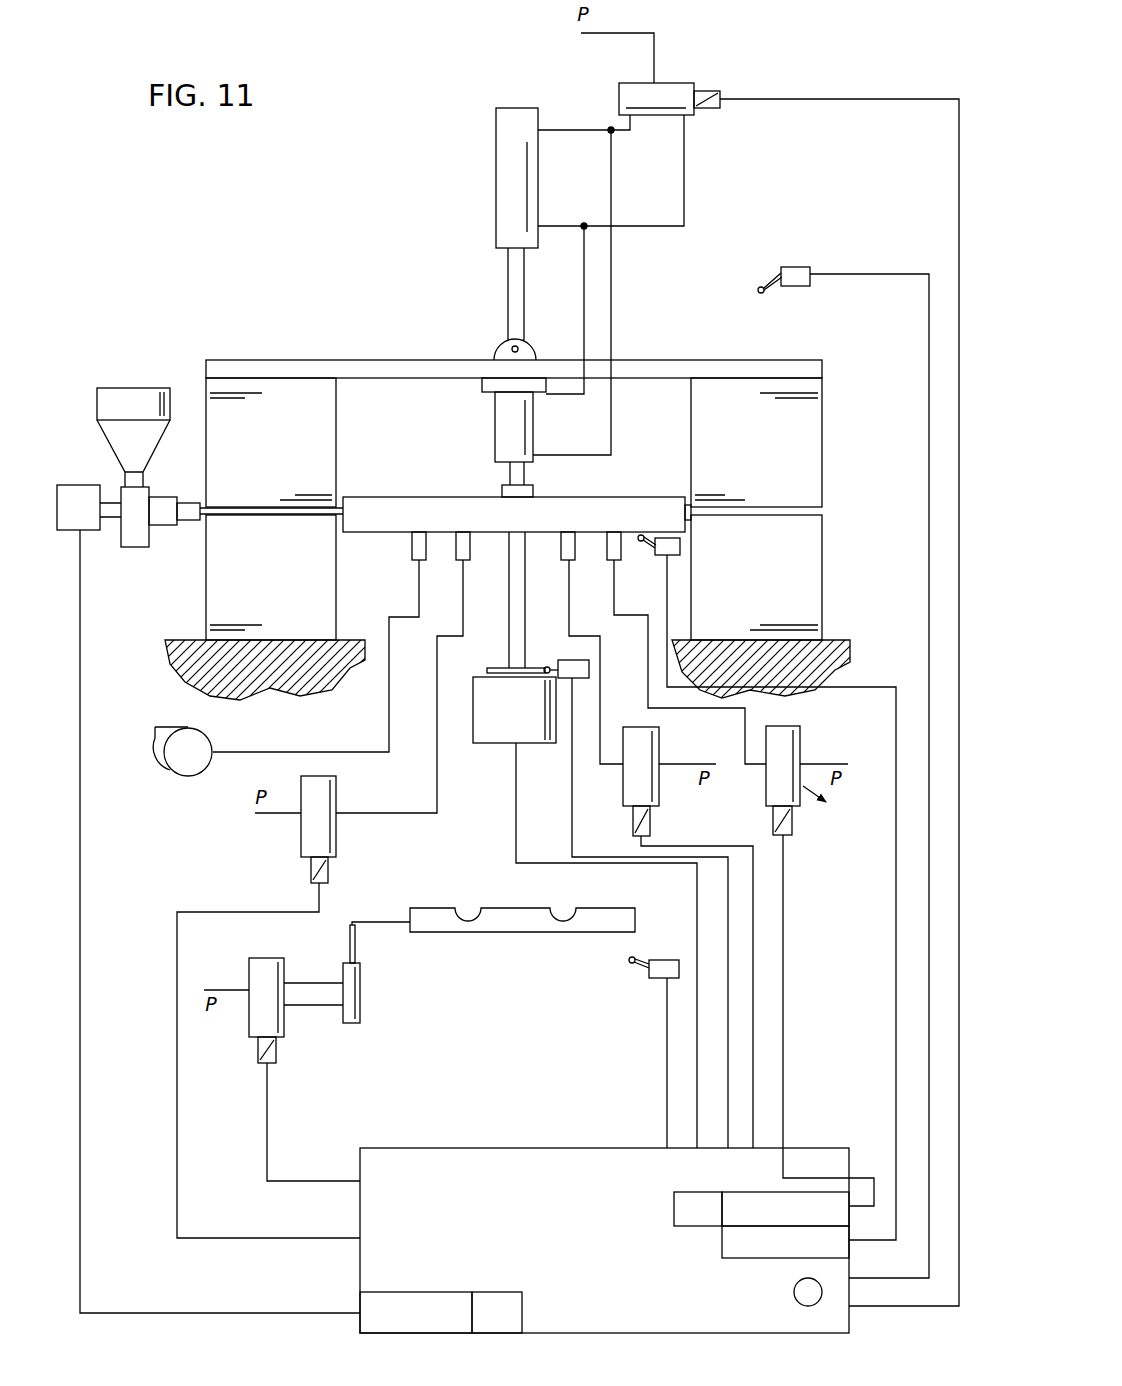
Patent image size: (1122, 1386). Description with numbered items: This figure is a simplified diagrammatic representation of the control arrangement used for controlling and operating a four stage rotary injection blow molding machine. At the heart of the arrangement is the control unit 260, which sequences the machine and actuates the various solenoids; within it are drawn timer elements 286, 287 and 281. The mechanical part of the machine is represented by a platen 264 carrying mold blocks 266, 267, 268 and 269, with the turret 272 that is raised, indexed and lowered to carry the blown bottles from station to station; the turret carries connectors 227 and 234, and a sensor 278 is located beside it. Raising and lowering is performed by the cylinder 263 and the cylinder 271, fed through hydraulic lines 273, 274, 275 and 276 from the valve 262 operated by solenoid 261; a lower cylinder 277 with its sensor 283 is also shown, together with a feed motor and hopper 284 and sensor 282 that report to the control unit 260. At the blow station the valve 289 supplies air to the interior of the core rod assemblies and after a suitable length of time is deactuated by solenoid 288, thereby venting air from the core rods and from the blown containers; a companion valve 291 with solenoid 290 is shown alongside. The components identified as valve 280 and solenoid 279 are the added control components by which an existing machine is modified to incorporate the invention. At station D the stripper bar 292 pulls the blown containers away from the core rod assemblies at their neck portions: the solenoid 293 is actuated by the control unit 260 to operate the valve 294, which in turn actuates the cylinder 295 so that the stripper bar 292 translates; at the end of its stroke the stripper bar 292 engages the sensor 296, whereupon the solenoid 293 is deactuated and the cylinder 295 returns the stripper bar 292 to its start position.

The heating element connector 227 is at (418, 545).
The thermocouple connector 234 is at (464, 545).
The control unit 260 is at (604, 1205).
The solenoid of valve 261 is at (701, 103).
The valve 262 is at (670, 83).
The hydraulic cylinder 263 is at (505, 143).
The upper platen 264 is at (703, 360).
The upper left mold block 266 is at (252, 458).
The upper right mold block 267 is at (739, 458).
The lower left mold block 268 is at (252, 585).
The lower right mold block 269 is at (739, 585).
The injection cylinder 271 is at (498, 422).
The turret 272 is at (613, 498).
The hydraulic line 273 is at (583, 323).
The hydraulic line 274 is at (613, 276).
The hydraulic line 275 is at (553, 223).
The hydraulic line 276 is at (585, 126).
The lower cylinder 277 is at (500, 731).
The limit switch 278 is at (683, 543).
The control component 279 is at (325, 879).
The control component 280 is at (332, 843).
The timer 281 is at (742, 1256).
The limit switch 282 is at (799, 280).
The limit switch 283 is at (572, 664).
The feed motor and hopper 284 is at (97, 488).
The timer with time delay 286 is at (432, 1298).
The timer with time delay 287 is at (740, 1198).
The solenoid 288 is at (790, 826).
The valve 289 is at (792, 753).
The solenoid 290 is at (650, 829).
The valve 291 is at (650, 754).
The stripper bar 292 is at (587, 916).
The solenoid 293 is at (270, 1056).
The valve 294 is at (301, 979).
The cylinder 295 is at (357, 1001).
The sensor 296 is at (640, 958).